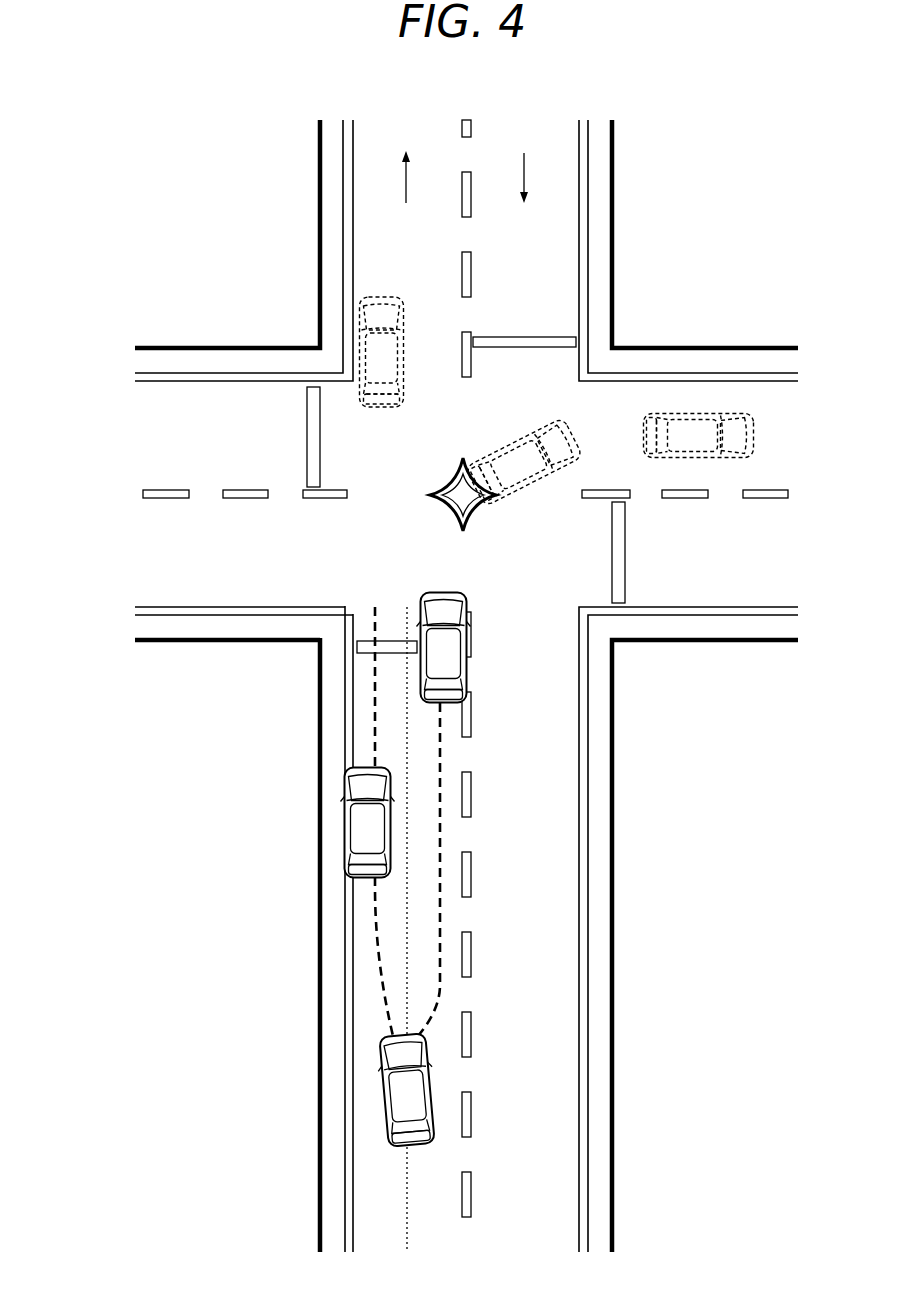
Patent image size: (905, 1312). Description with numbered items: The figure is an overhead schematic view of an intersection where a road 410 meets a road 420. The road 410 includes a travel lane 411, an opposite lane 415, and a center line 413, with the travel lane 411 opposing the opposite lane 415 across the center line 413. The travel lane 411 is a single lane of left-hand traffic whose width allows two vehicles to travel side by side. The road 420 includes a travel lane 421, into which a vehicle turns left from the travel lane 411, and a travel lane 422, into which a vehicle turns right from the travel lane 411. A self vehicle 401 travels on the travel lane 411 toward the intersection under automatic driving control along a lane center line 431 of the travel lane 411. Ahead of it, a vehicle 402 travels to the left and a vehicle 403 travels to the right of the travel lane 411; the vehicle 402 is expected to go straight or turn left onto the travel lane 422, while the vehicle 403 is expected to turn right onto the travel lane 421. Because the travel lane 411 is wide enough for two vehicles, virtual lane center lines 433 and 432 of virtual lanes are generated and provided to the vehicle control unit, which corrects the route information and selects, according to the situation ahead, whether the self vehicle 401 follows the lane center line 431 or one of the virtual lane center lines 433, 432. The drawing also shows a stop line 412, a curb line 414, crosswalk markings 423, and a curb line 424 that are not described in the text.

The self vehicle 401 is at (412, 1133).
The vehicle 402 is at (362, 840).
The vehicle 403 is at (441, 665).
The road 410 is at (312, 922).
The travel lane 411 is at (377, 1198).
The stop line 412 is at (388, 645).
The center line 413 is at (471, 1110).
The curb line 414 is at (348, 1143).
The opposite lane 415 is at (547, 247).
The road 420 is at (263, 647).
The travel lane 421 is at (248, 403).
The travel lane 422 is at (188, 577).
The crosswalk markings 423 is at (240, 490).
The curb line 424 is at (178, 378).
The lane center line 431 is at (408, 922).
The virtual lane center line 432 is at (441, 990).
The virtual lane center line 433 is at (377, 993).